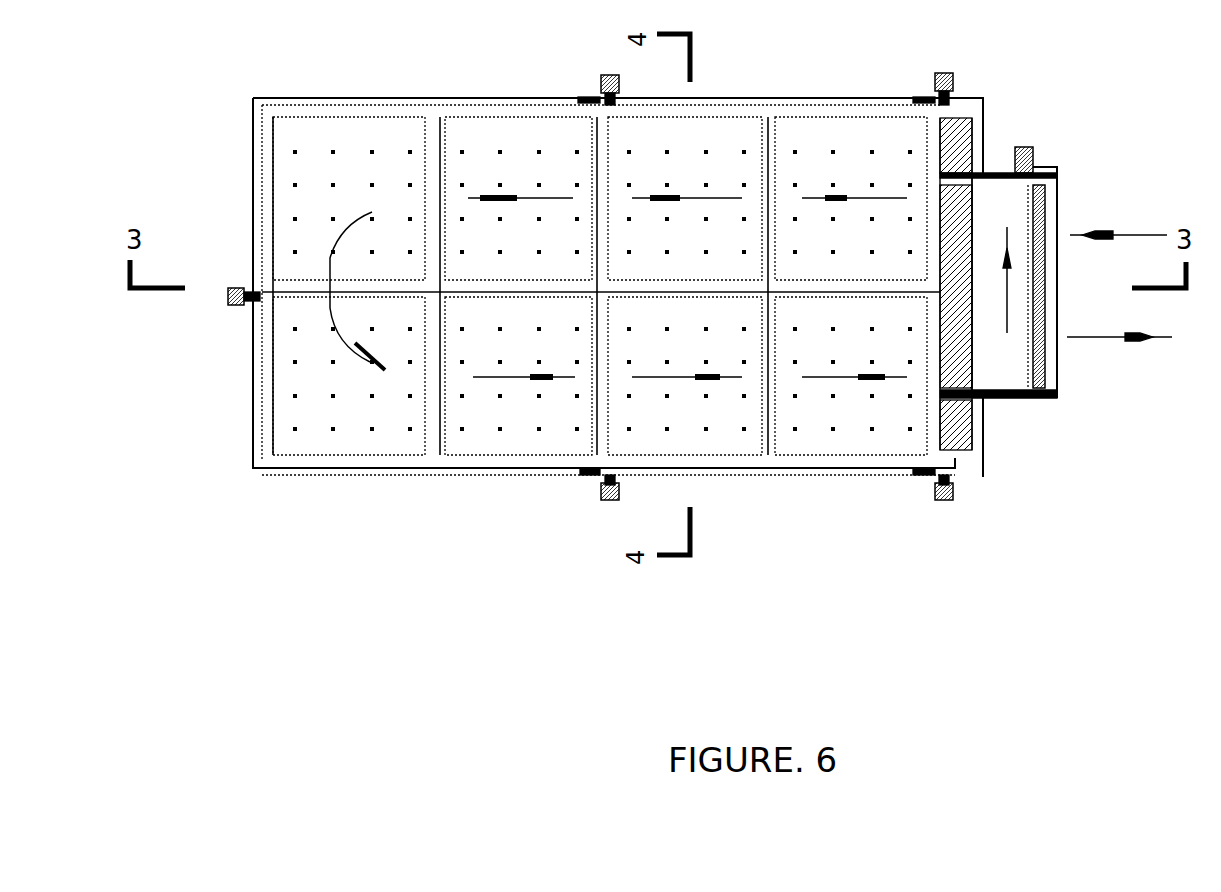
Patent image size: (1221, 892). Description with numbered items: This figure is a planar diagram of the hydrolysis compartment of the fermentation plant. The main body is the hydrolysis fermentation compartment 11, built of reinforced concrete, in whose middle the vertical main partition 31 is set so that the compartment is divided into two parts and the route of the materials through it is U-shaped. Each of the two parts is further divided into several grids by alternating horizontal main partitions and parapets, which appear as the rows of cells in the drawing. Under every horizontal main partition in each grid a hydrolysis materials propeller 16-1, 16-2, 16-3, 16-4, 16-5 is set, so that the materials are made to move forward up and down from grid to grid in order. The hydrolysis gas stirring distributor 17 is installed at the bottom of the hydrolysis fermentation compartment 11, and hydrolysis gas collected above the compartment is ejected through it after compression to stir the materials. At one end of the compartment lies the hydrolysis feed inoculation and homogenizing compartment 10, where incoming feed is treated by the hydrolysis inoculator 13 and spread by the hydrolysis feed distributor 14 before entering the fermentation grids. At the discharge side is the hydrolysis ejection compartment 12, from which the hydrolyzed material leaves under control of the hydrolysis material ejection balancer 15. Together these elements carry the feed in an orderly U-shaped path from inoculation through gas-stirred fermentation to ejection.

The hydrolysis feed inoculation and homogenizing compartment 10 is at (993, 207).
The hydrolysis fermentation compartment 11 is at (808, 148).
The hydrolysis ejection compartment 12 is at (1000, 372).
The hydrolysis inoculator 13 is at (1047, 230).
The hydrolysis feed distributor 14 is at (968, 140).
The hydrolysis material ejection balancer 15 is at (972, 445).
The hydrolysis materials propeller 16-1 is at (962, 68).
The hydrolysis materials propeller 16-2 is at (592, 135).
The hydrolysis materials propeller 16-3 is at (235, 305).
The hydrolysis materials propeller 16-4 is at (603, 498).
The hydrolysis materials propeller 16-5 is at (937, 500).
The hydrolysis gas stirring distributor 17 is at (702, 152).
The vertical main partition 31 is at (300, 285).